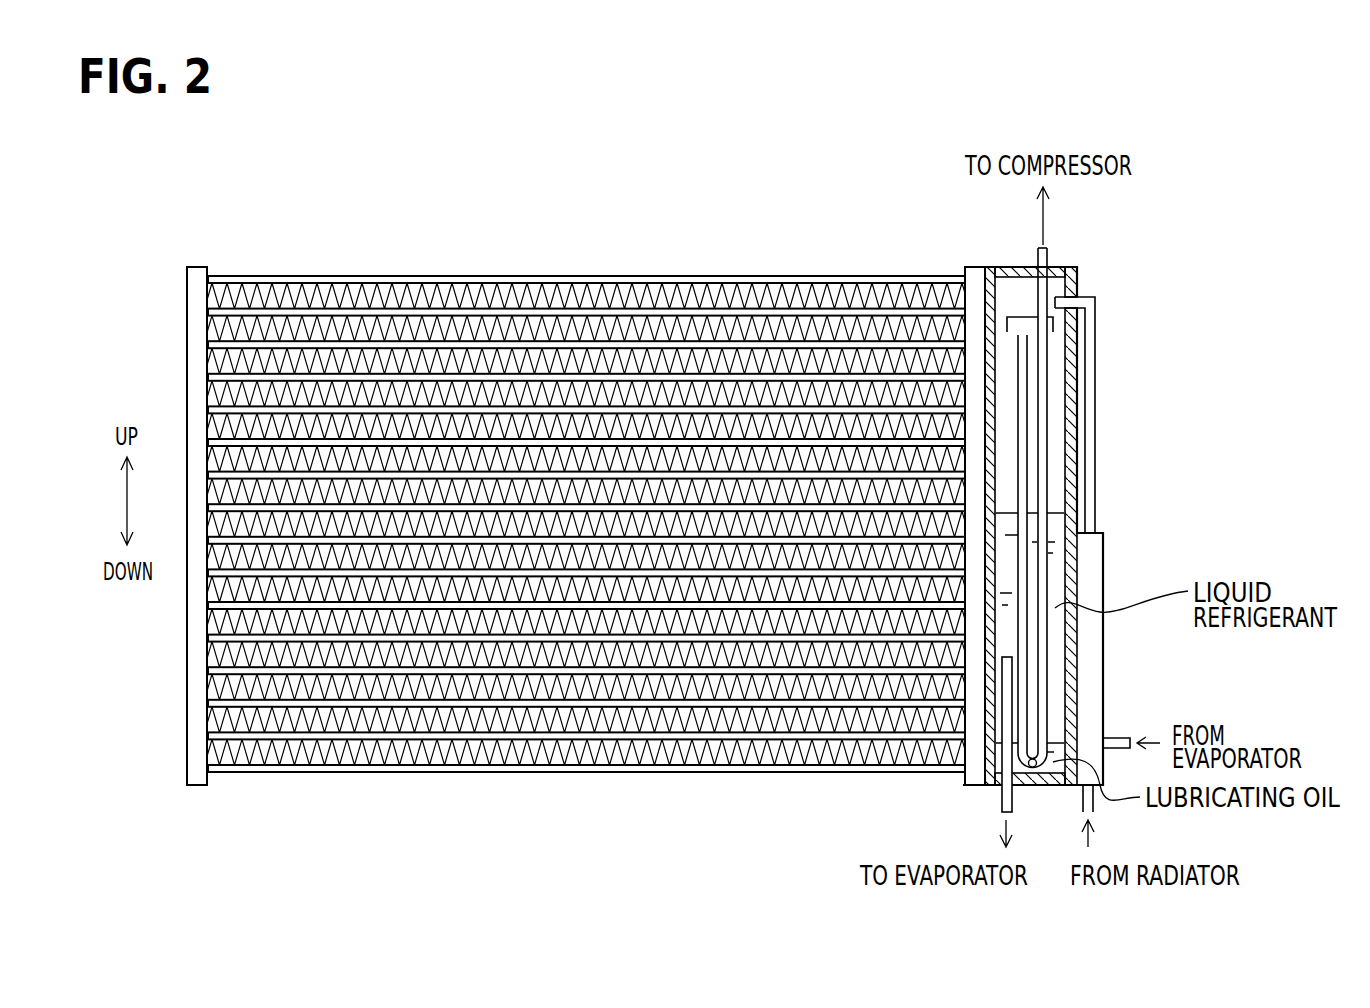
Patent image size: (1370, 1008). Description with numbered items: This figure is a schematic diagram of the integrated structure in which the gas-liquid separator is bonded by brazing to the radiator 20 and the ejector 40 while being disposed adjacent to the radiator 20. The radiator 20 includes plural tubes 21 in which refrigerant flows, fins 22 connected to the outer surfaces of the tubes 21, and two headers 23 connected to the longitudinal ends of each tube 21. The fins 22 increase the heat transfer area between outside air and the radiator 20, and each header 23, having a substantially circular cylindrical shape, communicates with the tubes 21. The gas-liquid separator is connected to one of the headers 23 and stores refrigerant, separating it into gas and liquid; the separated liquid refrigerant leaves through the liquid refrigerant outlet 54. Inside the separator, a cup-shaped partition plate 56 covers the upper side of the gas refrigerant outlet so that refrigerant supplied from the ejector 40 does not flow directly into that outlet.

The radiator 20 is at (546, 488).
The tubes 21 is at (365, 347).
The fins 22 is at (250, 325).
The headers 23 is at (190, 340).
The ejector 40 is at (1103, 572).
The liquid refrigerant outlet 54 is at (1013, 657).
The partition plate 56 is at (1012, 322).